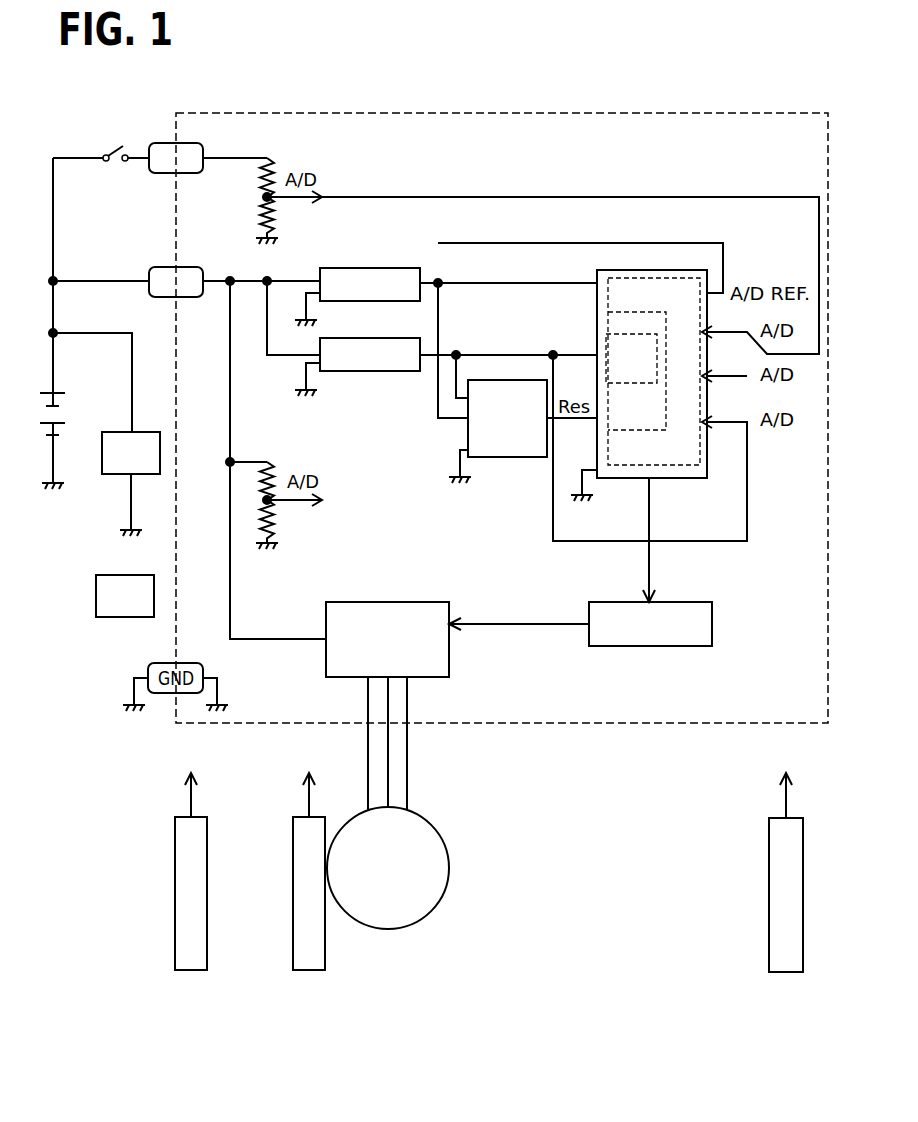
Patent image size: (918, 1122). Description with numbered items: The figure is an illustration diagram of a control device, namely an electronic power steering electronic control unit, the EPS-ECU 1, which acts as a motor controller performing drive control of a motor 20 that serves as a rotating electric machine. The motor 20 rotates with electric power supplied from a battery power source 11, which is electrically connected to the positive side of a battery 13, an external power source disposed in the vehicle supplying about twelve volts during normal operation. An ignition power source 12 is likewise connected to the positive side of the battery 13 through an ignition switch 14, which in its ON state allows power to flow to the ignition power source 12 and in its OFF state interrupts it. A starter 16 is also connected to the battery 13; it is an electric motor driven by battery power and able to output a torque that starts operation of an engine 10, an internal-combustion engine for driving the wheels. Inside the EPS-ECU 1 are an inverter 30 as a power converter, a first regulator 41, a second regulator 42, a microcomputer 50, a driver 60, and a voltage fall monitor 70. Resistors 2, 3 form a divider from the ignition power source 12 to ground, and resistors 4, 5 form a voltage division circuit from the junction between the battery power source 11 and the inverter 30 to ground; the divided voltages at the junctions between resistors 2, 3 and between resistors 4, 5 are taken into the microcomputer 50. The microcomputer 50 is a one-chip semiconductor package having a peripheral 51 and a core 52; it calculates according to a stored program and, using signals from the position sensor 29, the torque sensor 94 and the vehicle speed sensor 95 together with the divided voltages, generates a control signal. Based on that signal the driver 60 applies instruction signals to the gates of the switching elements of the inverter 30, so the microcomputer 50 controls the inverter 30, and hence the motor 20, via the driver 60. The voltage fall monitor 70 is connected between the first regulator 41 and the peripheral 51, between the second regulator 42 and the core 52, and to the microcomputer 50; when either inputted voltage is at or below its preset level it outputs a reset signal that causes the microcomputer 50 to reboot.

The EPS-ECU 1 is at (410, 113).
The resistor 2 is at (276, 166).
The resistor 3 is at (276, 222).
The resistor 4 is at (276, 470).
The resistor 5 is at (276, 526).
The engine 10 is at (100, 598).
The battery power source 11 is at (157, 267).
The ignition power source 12 is at (157, 143).
The battery 13 is at (67, 403).
The ignition switch 14 is at (115, 143).
The starter 16 is at (149, 432).
The motor 20 is at (449, 866).
The position sensor 29 is at (325, 957).
The inverter 30 is at (384, 606).
The first regulator 41 is at (369, 268).
The second regulator 42 is at (376, 372).
The microcomputer 50 is at (621, 394).
The peripheral 51 is at (686, 464).
The core 52 is at (600, 353).
The driver 60 is at (712, 620).
The voltage fall monitor 70 is at (510, 458).
The torque sensor 94 is at (772, 908).
The vehicle speed sensor 95 is at (191, 963).